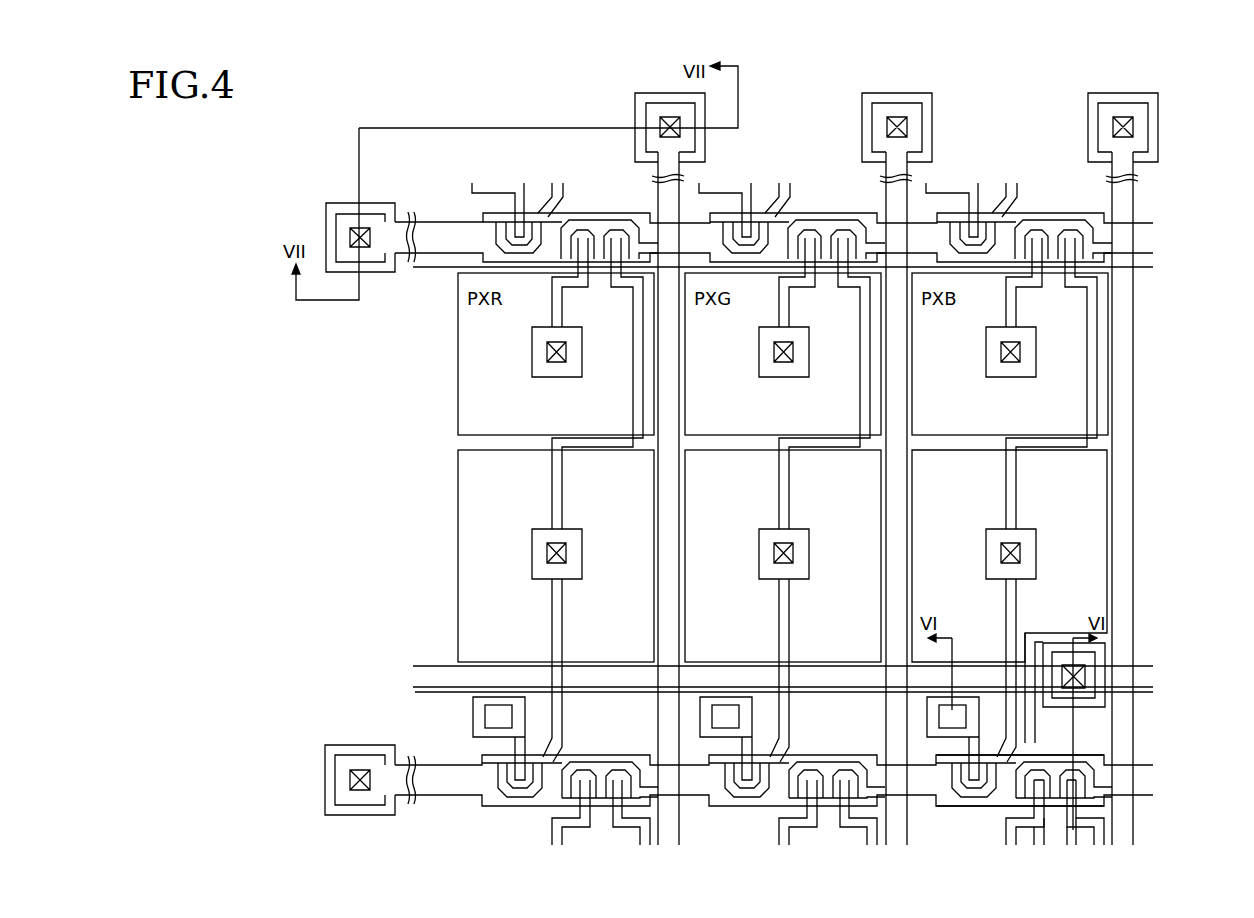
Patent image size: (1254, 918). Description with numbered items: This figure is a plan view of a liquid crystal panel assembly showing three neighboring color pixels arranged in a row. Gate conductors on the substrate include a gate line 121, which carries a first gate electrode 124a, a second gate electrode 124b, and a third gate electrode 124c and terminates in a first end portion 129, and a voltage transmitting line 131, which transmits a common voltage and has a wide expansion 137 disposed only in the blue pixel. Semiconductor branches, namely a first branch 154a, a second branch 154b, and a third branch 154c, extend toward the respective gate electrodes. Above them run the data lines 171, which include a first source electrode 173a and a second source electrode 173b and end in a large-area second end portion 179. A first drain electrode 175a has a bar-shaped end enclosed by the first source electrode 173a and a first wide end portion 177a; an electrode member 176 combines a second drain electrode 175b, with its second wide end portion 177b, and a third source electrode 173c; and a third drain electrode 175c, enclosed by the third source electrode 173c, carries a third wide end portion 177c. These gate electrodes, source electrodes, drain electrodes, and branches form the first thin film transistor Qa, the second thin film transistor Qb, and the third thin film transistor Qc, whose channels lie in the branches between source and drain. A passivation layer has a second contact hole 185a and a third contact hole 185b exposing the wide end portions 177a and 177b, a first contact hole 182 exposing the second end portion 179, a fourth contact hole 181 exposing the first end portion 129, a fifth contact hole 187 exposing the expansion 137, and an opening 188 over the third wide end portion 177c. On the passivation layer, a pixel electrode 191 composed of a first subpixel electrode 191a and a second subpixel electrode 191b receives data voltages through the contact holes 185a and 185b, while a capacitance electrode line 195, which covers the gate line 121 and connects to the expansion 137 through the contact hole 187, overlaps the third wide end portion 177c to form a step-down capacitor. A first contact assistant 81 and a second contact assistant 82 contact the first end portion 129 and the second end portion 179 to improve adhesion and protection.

The first contact assistant 81 is at (345, 203).
The fourth contact hole 181 is at (350, 237).
The first end portion 129 is at (372, 272).
The second contact assistant 82 is at (636, 108).
The first contact hole 182 is at (667, 118).
The second end portion 179 is at (697, 140).
The gate line 121 is at (915, 240).
The data line 171 is at (1133, 348).
The pixel electrode 191 is at (851, 467).
The first subpixel electrode 191a is at (1110, 385).
The second subpixel electrode 191b is at (1110, 477).
The electrode member 176 is at (1020, 490).
The second contact hole 185a is at (988, 362).
The first wide end portion 177a is at (1000, 352).
The third contact hole 185b is at (1000, 552).
The second wide end portion 177b is at (988, 562).
The second drain electrode 175b is at (1083, 290).
The first drain electrode 175a is at (1042, 800).
The third drain electrode 175c is at (1000, 745).
The first source electrode 173a is at (1035, 762).
The second source electrode 173b is at (1082, 762).
The third source electrode 173c is at (975, 800).
The first branch 154a is at (1050, 800).
The second branch 154b is at (1100, 800).
The third branch 154c is at (940, 753).
The first gate electrode 124a is at (1025, 660).
The second gate electrode 124b is at (1105, 757).
The third gate electrode 124c is at (945, 803).
The fifth contact hole 187 is at (1066, 668).
The expansion 137 is at (1105, 652).
The voltage transmitting line 131 is at (435, 685).
The capacitance electrode line 195 is at (463, 693).
The third wide end portion 177c is at (925, 705).
The opening 188 is at (938, 716).
The first thin film transistor Qa is at (1017, 812).
The second thin film transistor Qb is at (1096, 792).
The third thin film transistor Qc is at (957, 812).